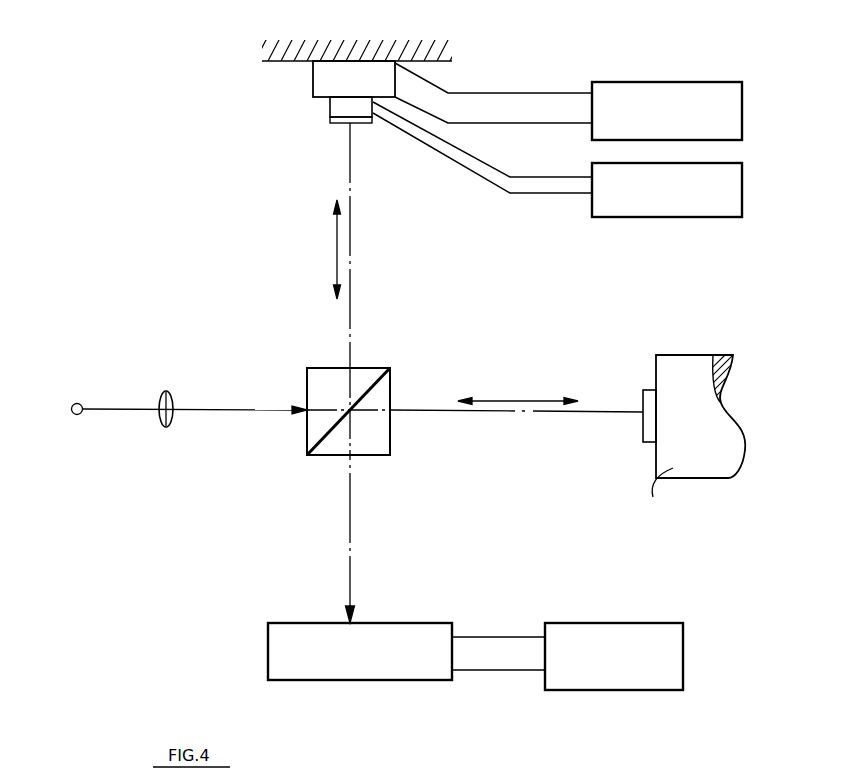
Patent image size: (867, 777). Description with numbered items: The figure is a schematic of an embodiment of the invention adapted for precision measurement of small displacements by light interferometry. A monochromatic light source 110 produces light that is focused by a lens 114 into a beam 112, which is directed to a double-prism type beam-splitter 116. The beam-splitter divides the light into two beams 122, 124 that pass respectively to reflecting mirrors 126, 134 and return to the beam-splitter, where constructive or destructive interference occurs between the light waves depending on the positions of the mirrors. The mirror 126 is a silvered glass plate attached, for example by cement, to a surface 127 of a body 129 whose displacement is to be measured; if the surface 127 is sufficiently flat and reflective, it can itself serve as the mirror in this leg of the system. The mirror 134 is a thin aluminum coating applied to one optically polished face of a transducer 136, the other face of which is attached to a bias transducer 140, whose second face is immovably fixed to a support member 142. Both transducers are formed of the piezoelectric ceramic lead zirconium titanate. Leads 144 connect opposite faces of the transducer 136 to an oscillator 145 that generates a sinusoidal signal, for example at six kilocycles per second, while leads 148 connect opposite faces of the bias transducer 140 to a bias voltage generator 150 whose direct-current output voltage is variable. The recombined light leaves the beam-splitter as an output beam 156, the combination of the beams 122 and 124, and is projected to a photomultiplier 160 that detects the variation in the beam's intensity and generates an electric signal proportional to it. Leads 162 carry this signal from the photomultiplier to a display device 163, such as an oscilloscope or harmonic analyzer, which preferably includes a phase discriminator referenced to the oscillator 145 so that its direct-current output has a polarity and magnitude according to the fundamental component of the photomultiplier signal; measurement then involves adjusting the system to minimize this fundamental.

The monochromatic light source 110 is at (72, 413).
The beam 112 is at (212, 409).
The lens 114 is at (160, 415).
The double-prism type beam-splitter 116 is at (371, 364).
The beam 122 is at (497, 415).
The beam 124 is at (350, 245).
The mirror 126 is at (647, 422).
The surface 127 is at (655, 378).
The body 129 is at (700, 450).
The mirror 134 is at (336, 127).
The transducer 136 is at (332, 103).
The bias transducer 140 is at (318, 80).
The support member 142 is at (432, 61).
The leads 144 is at (532, 194).
The oscillator 145 is at (680, 202).
The leads 148 is at (480, 95).
The bias voltage generator 150 is at (725, 122).
The output beam 156 is at (350, 523).
The photomultiplier 160 is at (378, 668).
The leads 162 is at (498, 668).
The display device 163 is at (662, 658).